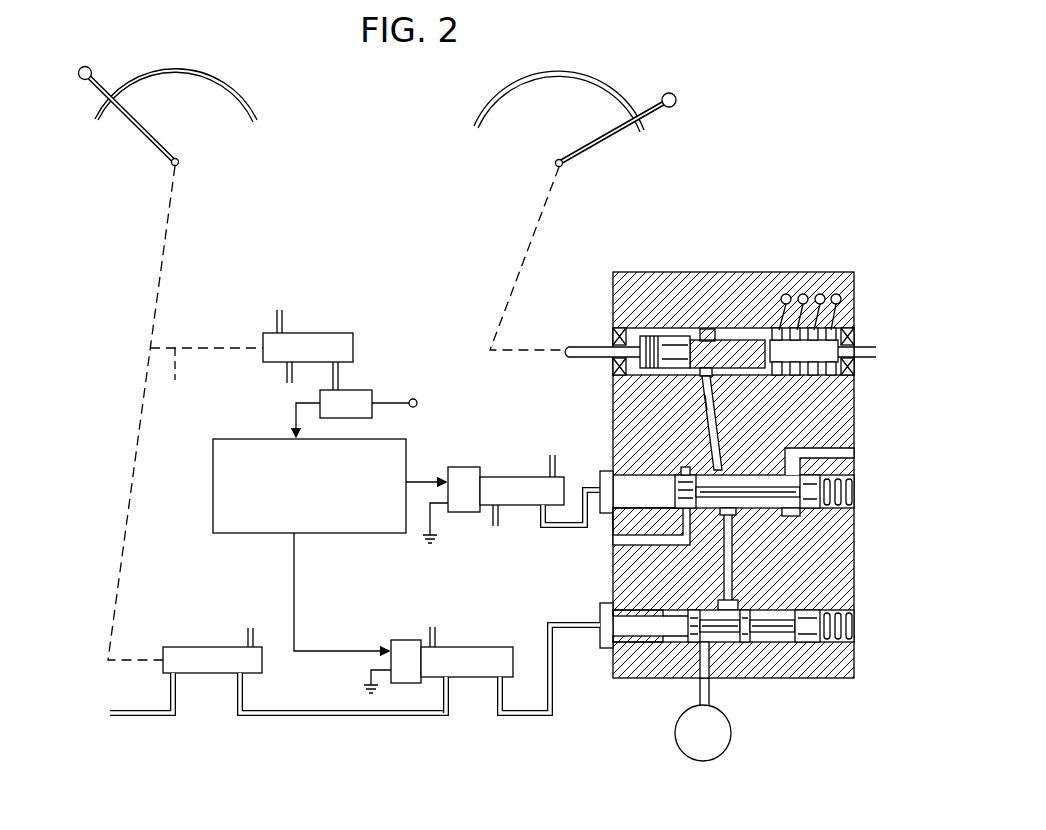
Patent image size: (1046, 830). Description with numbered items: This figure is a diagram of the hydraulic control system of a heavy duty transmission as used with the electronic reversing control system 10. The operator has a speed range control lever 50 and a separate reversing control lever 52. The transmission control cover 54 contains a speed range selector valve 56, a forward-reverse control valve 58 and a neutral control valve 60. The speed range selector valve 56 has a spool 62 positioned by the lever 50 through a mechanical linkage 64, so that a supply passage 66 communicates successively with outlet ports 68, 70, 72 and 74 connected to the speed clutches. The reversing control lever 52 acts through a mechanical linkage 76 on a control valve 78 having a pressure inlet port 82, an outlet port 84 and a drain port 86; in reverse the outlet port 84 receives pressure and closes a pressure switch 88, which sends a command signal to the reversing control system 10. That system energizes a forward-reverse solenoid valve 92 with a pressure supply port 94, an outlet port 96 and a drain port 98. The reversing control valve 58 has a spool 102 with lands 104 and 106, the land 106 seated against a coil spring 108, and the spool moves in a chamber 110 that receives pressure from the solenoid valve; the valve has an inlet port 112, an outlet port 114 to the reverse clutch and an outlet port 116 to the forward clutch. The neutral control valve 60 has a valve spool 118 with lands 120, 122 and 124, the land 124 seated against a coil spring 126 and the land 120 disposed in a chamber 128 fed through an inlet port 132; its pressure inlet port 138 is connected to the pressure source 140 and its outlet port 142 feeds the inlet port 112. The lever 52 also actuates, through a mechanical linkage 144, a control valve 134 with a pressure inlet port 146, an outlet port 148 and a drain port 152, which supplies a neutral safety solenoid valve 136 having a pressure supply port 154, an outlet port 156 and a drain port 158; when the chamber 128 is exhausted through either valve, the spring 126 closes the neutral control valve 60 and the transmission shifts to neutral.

The electronic reversing control system 10 is at (250, 438).
The speed range control lever 50 is at (606, 130).
The reversing control lever 52 is at (135, 118).
The control cover 54 is at (686, 272).
The speed range selector valve 56 is at (668, 331).
The forward-reverse control valve 58 is at (709, 452).
The neutral control valve 60 is at (692, 594).
The spool 62 is at (673, 357).
The mechanical linkage 64 is at (527, 240).
The supply passage 66 is at (717, 402).
The outlet port 68 is at (786, 294).
The outlet port 70 is at (803, 294).
The outlet port 72 is at (822, 294).
The outlet port 74 is at (842, 298).
The mechanical linkage 76 is at (178, 373).
The control valve 78 is at (320, 335).
The pressure inlet port 82 is at (285, 365).
The outlet port 84 is at (340, 366).
The drain port 86 is at (272, 330).
The pressure switch 88 is at (373, 394).
The forward-reverse solenoid valve 92 is at (513, 478).
The pressure supply port 94 is at (482, 512).
The outlet port 96 is at (544, 508).
The drain port 98 is at (546, 462).
The spool 102 is at (752, 498).
The land 104 is at (674, 490).
The land 106 is at (812, 507).
The coil spring 108 is at (858, 500).
The chamber 110 is at (631, 478).
The inlet port 112 is at (744, 559).
The outlet port 114 is at (783, 472).
The outlet port 116 is at (672, 510).
The valve spool 118 is at (740, 632).
The valve land 120 is at (638, 640).
The valve land 122 is at (745, 608).
The valve land 124 is at (806, 641).
The coil spring 126 is at (856, 612).
The chamber 128 is at (672, 612).
The inlet port 132 is at (600, 632).
The control valve 134 is at (180, 647).
The neutral safety solenoid valve 136 is at (470, 650).
The pressure inlet port 138 is at (690, 641).
The source of hydraulic fluid pressure 140 is at (727, 735).
The outlet port 142 is at (718, 606).
The mechanical linkage 144 is at (139, 433).
The pressure inlet port 146 is at (170, 683).
The outlet port 148 is at (236, 680).
The drain port 152 is at (248, 628).
The pressure supply port 154 is at (443, 681).
The outlet port 156 is at (497, 681).
The drain port 158 is at (420, 643).